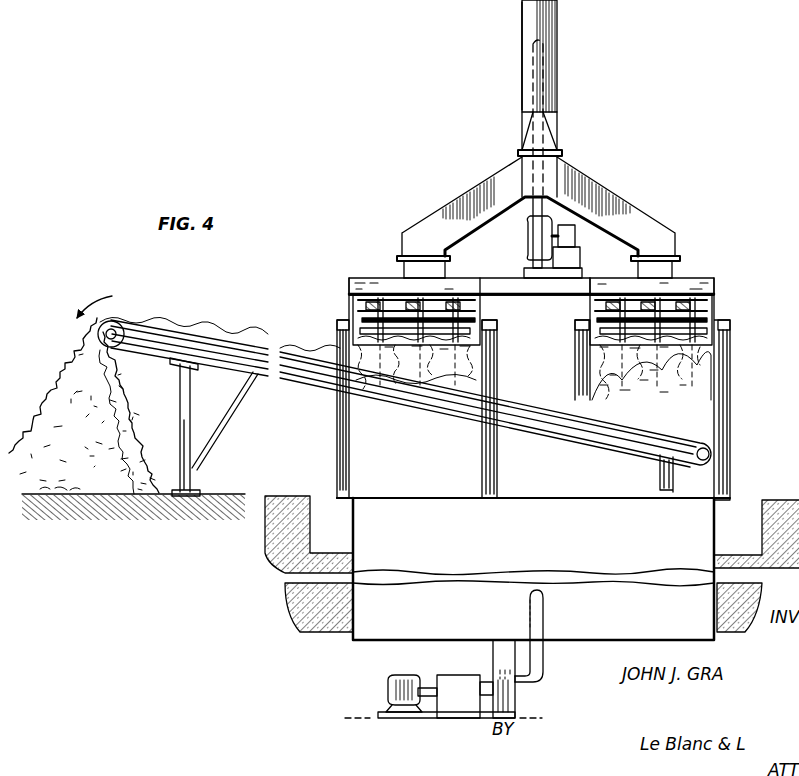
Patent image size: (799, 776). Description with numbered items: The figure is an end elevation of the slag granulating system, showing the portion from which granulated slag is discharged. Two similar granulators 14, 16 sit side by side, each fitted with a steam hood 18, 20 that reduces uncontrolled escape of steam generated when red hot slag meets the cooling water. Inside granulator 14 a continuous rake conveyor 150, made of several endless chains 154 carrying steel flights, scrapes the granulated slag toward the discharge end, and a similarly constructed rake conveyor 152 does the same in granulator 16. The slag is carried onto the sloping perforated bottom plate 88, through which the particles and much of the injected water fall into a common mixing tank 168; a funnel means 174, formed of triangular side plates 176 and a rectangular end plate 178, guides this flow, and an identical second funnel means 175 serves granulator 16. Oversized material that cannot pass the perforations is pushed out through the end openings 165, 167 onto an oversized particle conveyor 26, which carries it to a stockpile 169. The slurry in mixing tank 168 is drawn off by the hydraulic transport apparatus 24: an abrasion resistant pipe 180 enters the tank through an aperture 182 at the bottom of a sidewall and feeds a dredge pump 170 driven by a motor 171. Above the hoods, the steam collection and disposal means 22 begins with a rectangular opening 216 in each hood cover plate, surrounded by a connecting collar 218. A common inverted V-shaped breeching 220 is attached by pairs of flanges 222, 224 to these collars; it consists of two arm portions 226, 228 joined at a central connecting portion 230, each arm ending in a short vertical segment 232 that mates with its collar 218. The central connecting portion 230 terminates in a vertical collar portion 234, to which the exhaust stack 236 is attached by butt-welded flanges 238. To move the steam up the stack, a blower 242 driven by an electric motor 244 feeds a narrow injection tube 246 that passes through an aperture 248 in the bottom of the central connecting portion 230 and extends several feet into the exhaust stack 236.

The granulator 14 is at (343, 278).
The granulator 16 is at (717, 280).
The steam hood 18 is at (378, 275).
The steam hood 20 is at (701, 277).
The steam collection and disposal means 22 is at (516, 88).
The hydraulic transport apparatus 24 is at (351, 623).
The oversized particle conveyor 26 is at (290, 386).
The granulator bottom plate 88 is at (494, 383).
The rake conveyor 150 is at (352, 312).
The rake conveyor 152 is at (692, 332).
The endless chains 154 is at (358, 326).
The opening 165 is at (357, 354).
The discharge opening 167 is at (457, 345).
The mixing tank 168 is at (406, 612).
The stockpile 169 is at (88, 483).
The dredge pump 170 is at (516, 705).
The motor 171 is at (397, 718).
The funnel means 174 is at (368, 465).
The second funnel means 175 is at (706, 425).
The triangular side plates 176 is at (352, 443).
The rectangular end plate 178 is at (446, 483).
The abrasion resistant pipe 180 is at (535, 667).
The aperture 182 is at (535, 608).
The opening 216 is at (403, 277).
The connecting collar 218 is at (444, 273).
The breeching 220 is at (508, 185).
The flanges 222 is at (410, 276).
The flanges 224 is at (660, 266).
The arm portion 226 is at (446, 211).
The arm portion 228 is at (653, 250).
The central connecting portion 230 is at (564, 166).
The vertical segment 232 is at (425, 252).
The vertical collar portion 234 is at (524, 160).
The exhaust stack 236 is at (521, 18).
The butt-welded flanges 238 is at (561, 152).
The blower 242 is at (527, 243).
The electric motor 244 is at (574, 234).
The injection tube 246 is at (532, 52).
The aperture 248 is at (549, 197).